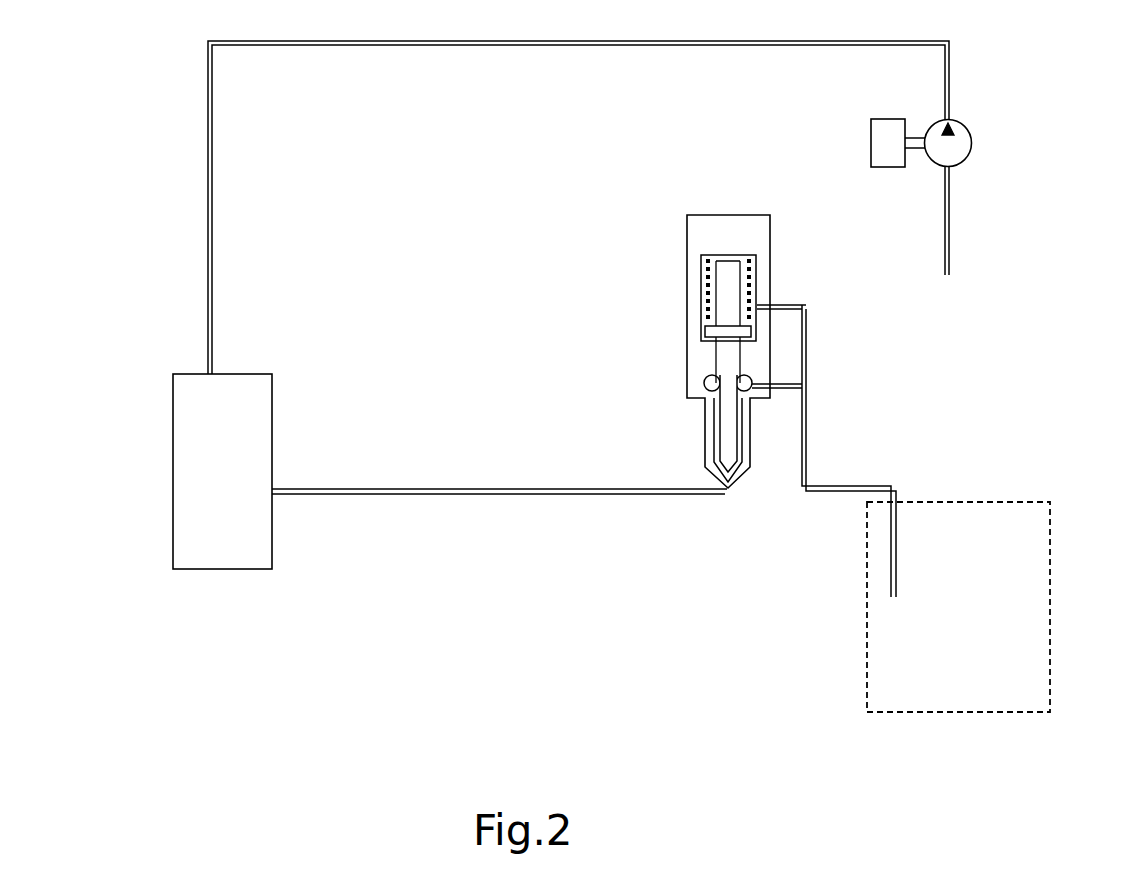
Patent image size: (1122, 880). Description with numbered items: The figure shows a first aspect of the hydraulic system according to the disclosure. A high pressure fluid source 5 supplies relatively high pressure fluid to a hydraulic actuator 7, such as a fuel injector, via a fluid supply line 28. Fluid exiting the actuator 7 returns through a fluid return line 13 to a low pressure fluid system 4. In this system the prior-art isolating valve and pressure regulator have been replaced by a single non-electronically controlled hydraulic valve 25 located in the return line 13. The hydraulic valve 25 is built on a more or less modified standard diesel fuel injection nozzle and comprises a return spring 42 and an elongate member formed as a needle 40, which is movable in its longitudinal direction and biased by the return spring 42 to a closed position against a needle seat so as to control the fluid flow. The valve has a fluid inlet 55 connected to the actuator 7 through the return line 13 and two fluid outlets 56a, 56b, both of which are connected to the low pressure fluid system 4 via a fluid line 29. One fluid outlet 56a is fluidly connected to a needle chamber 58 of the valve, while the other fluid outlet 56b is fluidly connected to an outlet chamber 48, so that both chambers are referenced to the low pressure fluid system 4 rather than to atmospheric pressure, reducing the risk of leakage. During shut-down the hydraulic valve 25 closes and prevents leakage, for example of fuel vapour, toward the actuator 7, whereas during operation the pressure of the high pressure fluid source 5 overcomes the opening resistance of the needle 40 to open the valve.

The fluid supply line 28 is at (208, 197).
The high pressure fluid source 5 is at (973, 136).
The hydraulic valve 25 is at (776, 266).
The needle chamber 58 is at (712, 257).
The return spring 42 is at (707, 272).
The fluid outlet 56a is at (765, 306).
The fluid outlet 56b is at (772, 385).
The outlet chamber 48 is at (712, 381).
The needle 40 is at (727, 410).
The fluid inlet 55 is at (725, 495).
The fluid line 29 is at (807, 462).
The hydraulic actuator 7 is at (184, 460).
The fluid return line 13 is at (442, 488).
The low pressure fluid system 4 is at (1038, 715).